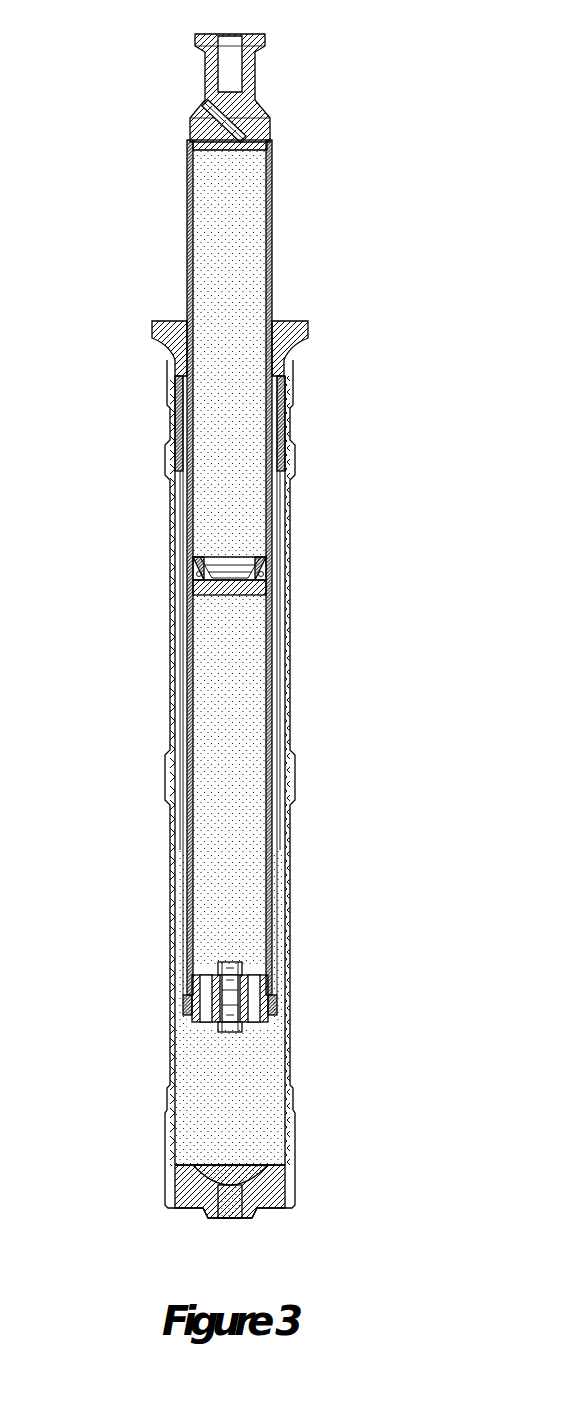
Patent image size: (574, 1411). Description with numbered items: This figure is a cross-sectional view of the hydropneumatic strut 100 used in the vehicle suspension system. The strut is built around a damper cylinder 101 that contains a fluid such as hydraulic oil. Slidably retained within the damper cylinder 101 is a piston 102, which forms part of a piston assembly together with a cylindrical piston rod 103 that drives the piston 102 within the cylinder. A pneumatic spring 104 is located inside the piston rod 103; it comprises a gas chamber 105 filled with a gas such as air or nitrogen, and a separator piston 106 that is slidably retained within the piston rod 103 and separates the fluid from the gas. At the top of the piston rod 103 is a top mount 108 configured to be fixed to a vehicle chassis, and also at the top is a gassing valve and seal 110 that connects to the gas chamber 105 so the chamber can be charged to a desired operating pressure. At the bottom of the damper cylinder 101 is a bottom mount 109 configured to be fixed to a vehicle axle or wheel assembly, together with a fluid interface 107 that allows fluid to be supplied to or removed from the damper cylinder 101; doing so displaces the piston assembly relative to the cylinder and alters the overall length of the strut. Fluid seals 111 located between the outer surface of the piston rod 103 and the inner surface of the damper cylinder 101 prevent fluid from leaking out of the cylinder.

The hydropneumatic strut 100 is at (110, 208).
The damper cylinder 101 is at (228, 640).
The piston 102 is at (276, 1002).
The cylindrical piston rod 103 is at (188, 258).
The pneumatic spring 104 is at (272, 250).
The gas chamber 105 is at (243, 300).
The separator piston 106 is at (272, 583).
The fluid interface 107 is at (230, 1216).
The top mount 108 is at (288, 92).
The bottom mount 109 is at (286, 1172).
The gassing valve and seal 110 is at (212, 128).
The fluid seals 111 is at (298, 345).